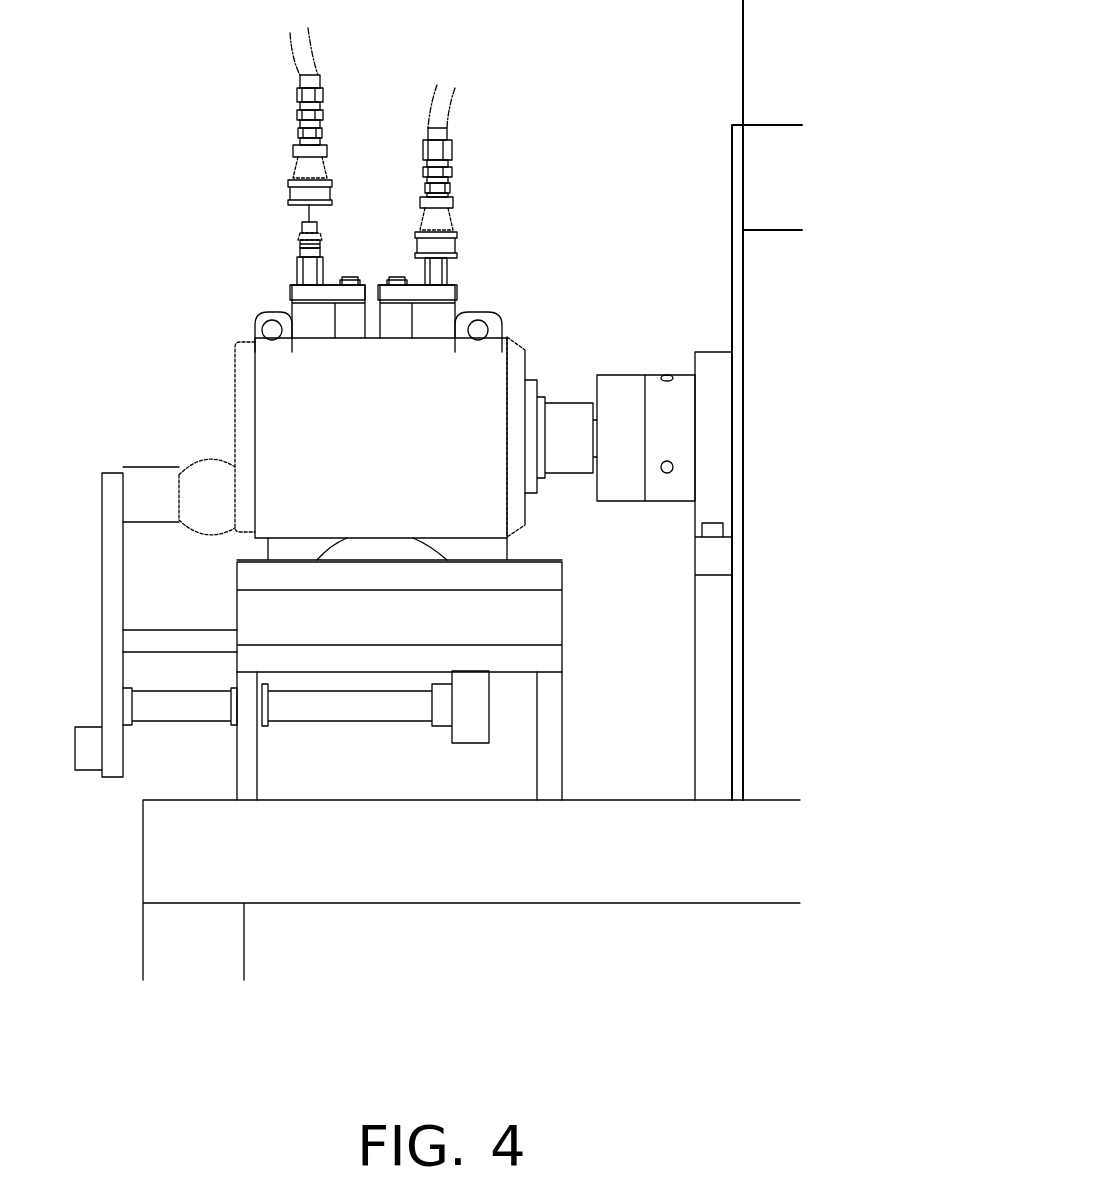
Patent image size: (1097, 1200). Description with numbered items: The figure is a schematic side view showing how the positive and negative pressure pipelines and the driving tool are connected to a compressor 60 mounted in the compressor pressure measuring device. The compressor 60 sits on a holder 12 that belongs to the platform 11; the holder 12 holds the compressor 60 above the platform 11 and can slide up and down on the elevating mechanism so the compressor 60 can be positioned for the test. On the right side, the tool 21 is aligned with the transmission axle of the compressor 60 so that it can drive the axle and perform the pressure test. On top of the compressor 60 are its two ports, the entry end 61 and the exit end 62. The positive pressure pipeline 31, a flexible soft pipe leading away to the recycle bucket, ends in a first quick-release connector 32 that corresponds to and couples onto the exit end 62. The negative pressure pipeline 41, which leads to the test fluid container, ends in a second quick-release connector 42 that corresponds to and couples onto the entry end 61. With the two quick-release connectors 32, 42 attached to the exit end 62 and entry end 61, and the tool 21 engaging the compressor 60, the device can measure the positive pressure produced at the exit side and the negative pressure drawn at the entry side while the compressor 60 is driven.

The platform 11 is at (188, 800).
The holder 12 is at (108, 497).
The tool 21 is at (622, 378).
The positive pressure pipeline 31 is at (443, 117).
The first quick-release connector 32 is at (443, 230).
The negative pressure pipeline 41 is at (298, 48).
The second quick-release connector 42 is at (302, 167).
The compressor 60 is at (255, 410).
The entry end 61 is at (308, 283).
The exit end 62 is at (447, 275).